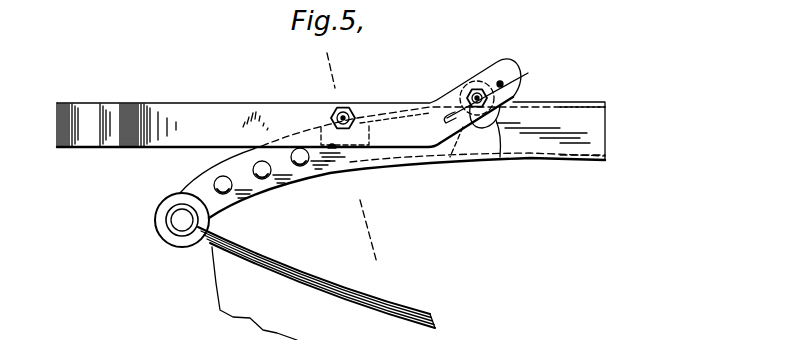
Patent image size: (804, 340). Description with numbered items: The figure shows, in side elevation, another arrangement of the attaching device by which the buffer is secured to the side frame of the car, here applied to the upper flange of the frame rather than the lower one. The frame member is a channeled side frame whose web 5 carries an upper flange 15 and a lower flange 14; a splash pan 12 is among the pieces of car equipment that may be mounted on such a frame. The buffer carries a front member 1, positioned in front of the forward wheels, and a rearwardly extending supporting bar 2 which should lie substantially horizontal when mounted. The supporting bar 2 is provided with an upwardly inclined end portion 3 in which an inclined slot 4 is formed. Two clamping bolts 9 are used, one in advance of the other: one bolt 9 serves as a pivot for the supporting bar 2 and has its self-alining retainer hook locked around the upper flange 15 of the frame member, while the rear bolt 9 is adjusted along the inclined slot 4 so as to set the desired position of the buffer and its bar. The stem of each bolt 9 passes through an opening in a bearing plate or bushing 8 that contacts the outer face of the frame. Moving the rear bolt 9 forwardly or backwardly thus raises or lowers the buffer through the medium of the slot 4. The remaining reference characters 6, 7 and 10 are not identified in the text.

The front member 1 is at (100, 142).
The supporting bar 2 is at (306, 120).
The end portion 3 is at (506, 70).
The slot 4 is at (494, 92).
The web 5 is at (578, 142).
The pivot 6 is at (178, 223).
The spring blade 7 is at (273, 262).
The bearing plate 8 is at (325, 62).
The bolt 9 is at (348, 114).
The plate 10 is at (358, 113).
The splash pan 12 is at (217, 278).
The lower flange 14 is at (607, 155).
The upper flange 15 is at (608, 107).